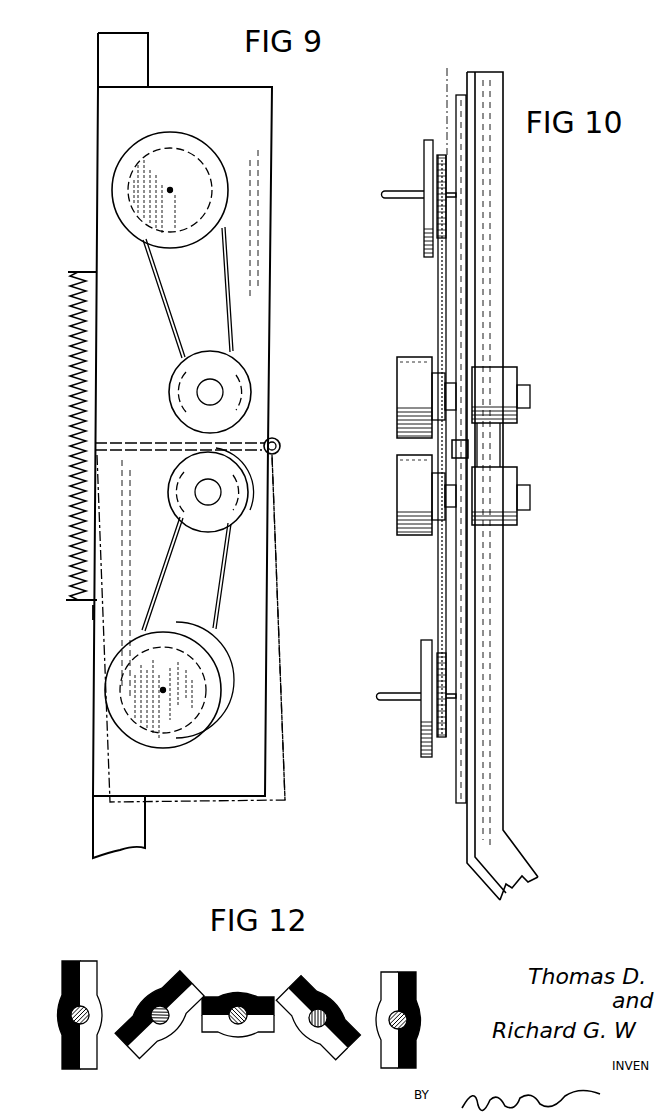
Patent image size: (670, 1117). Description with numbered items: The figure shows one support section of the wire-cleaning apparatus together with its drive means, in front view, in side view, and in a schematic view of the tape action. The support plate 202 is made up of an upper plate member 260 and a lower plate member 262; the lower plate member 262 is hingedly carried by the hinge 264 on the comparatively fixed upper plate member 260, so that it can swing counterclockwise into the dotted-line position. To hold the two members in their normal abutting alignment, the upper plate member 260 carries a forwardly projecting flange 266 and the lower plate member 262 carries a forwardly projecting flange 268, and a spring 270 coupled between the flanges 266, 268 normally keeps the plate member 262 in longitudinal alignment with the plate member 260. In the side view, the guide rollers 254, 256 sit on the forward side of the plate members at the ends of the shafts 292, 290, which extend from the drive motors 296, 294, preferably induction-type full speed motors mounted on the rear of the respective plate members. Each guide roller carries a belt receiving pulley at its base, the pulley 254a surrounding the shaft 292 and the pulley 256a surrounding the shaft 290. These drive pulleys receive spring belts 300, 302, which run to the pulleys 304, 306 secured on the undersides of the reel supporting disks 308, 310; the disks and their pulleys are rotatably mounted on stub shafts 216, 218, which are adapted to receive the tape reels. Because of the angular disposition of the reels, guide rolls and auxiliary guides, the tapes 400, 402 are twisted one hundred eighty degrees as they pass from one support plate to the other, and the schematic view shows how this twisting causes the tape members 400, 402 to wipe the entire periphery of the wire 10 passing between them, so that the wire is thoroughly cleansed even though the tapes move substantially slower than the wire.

In FIG. 9, the support plate 202 is at (84, 160).
In FIG. 9, the upper plate member 260 is at (262, 252).
In FIG. 10, the upper plate member 260 is at (465, 305).
In FIG. 9, the lower plate member 262 is at (258, 560).
In FIG. 10, the lower plate member 262 is at (463, 597).
In FIG. 9, the hinge 264 is at (292, 443).
In FIG. 10, the hinge 264 is at (470, 449).
In FIG. 9, the forwardly projecting flange 266 is at (72, 270).
In FIG. 9, the forwardly projecting flange 268 is at (92, 614).
In FIG. 9, the spring 270 is at (72, 462).
In FIG. 10, the guide roller 254 is at (407, 536).
In FIG. 9, the belt receiving pulley 254a is at (277, 567).
In FIG. 10, the guide roller 256 is at (397, 424).
In FIG. 10, the belt receiving pulley 256a is at (433, 390).
In FIG. 10, the shaft 290 is at (440, 376).
In FIG. 10, the shaft 292 is at (450, 486).
In FIG. 10, the drive motor 294 is at (508, 381).
In FIG. 10, the drive motor 296 is at (512, 521).
In FIG. 10, the spring belt 300 is at (437, 628).
In FIG. 10, the spring belt 302 is at (437, 276).
In FIG. 10, the pulley 304 is at (443, 738).
In FIG. 10, the pulley 306 is at (448, 97).
In FIG. 10, the reel supporting disk 308 is at (420, 742).
In FIG. 10, the reel supporting disk 310 is at (424, 148).
In FIG. 10, the stub shaft 216 is at (387, 703).
In FIG. 10, the stub shaft 218 is at (389, 188).
In FIG. 12, the tape member 400 is at (63, 966).
In FIG. 12, the tape member 402 is at (97, 1068).
In FIG. 12, the wire 10 is at (83, 1006).